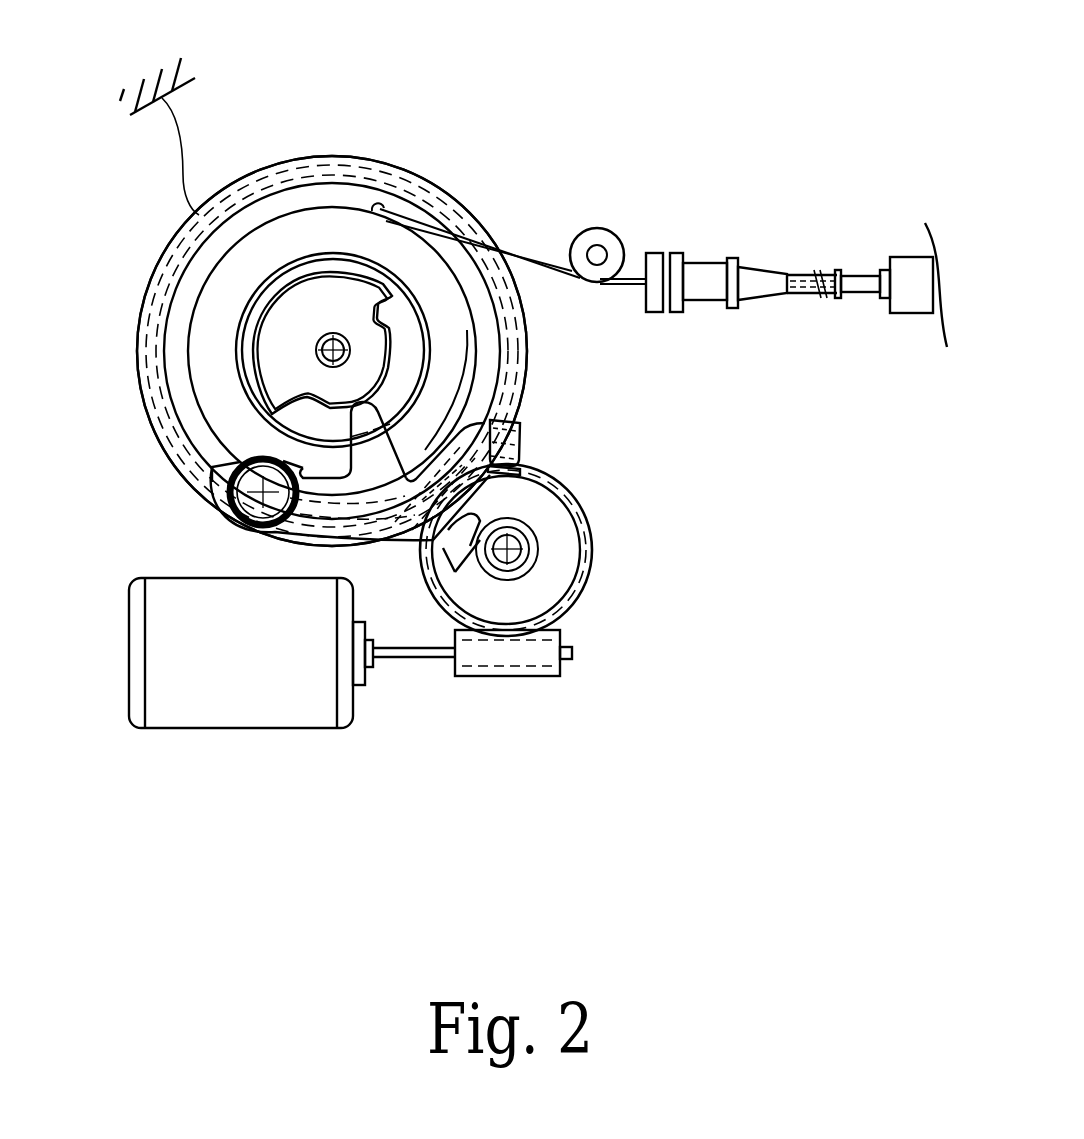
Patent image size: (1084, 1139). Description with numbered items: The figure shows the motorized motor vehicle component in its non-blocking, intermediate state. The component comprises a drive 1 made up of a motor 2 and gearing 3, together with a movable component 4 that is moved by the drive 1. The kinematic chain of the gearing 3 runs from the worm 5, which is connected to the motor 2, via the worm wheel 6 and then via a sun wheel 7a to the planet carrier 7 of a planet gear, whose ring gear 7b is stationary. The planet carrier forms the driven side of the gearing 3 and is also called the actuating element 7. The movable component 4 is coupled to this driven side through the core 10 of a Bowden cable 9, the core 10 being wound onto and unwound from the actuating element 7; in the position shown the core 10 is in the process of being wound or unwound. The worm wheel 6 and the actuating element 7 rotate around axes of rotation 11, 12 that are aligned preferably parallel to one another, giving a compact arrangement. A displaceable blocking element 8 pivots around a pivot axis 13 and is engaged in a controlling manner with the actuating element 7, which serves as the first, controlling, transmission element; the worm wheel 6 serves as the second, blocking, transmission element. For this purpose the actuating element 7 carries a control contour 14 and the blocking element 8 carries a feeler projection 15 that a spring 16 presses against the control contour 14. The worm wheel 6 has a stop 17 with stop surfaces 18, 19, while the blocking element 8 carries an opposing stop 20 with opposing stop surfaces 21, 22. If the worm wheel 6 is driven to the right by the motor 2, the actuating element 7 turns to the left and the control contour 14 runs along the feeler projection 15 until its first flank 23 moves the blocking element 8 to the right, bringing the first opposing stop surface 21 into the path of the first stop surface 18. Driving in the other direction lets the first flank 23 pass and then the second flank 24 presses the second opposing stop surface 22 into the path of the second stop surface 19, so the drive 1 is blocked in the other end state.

The drive 1 is at (150, 447).
The motor 2 is at (287, 693).
The gearing 3 is at (557, 183).
The movable component 4 is at (907, 265).
The worm 5 is at (543, 653).
The worm wheel 6 is at (576, 583).
The actuating element 7 is at (228, 310).
The sun wheel 7a is at (398, 164).
The ring gear 7b is at (270, 170).
The blocking element 8 is at (403, 535).
The Bowden cable 9 is at (800, 300).
The core 10 is at (492, 236).
The axis of rotation 11 is at (333, 335).
The axis of rotation 12 is at (510, 549).
The pivot axis 13 is at (228, 462).
The control contour 14 is at (390, 357).
The feeler projection 15 is at (370, 447).
The spring 16 is at (226, 482).
The stop 17 is at (453, 570).
The first stop surface 18 is at (499, 552).
The second stop surface 19 is at (497, 553).
The opposing stop 20 is at (512, 442).
The first opposing stop surface 21 is at (490, 486).
The second opposing stop surface 22 is at (505, 454).
The first flank 23 is at (298, 425).
The second flank 24 is at (388, 301).